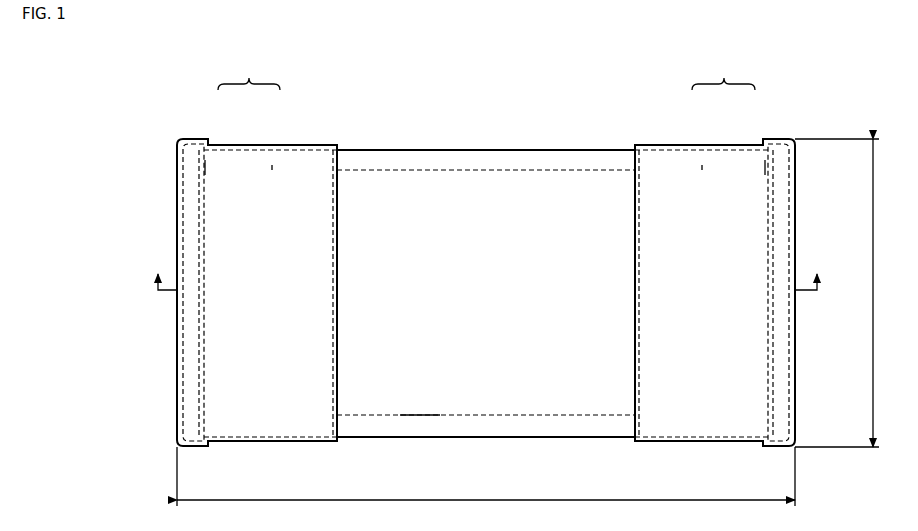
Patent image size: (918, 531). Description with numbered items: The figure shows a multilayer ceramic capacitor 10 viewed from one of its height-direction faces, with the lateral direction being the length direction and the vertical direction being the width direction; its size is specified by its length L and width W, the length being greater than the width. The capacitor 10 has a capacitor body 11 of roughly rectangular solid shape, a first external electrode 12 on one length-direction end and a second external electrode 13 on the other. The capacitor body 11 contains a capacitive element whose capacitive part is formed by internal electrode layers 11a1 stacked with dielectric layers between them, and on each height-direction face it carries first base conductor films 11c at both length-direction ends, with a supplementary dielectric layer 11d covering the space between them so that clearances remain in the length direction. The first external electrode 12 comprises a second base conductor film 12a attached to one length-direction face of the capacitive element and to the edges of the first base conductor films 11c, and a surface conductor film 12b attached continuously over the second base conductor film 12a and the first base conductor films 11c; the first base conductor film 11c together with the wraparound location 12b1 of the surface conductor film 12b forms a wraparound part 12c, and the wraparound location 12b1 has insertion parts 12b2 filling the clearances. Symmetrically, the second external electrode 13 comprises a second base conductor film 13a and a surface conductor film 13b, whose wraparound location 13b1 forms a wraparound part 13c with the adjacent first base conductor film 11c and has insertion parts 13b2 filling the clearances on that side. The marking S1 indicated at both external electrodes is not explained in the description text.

The multilayer ceramic capacitor 10 is at (175, 152).
The capacitor body 11 is at (430, 148).
The internal electrode layers 11a1 is at (418, 405).
The first base conductor films 11c is at (272, 165).
The supplementary dielectric layers 11d is at (553, 158).
The first external electrode 12 is at (177, 325).
The second base conductor film 12a is at (188, 222).
The surface conductor film 12b is at (182, 378).
The wraparound location 12b1 is at (207, 168).
The insertion parts 12b2 is at (342, 146).
The wraparound parts 12c is at (249, 73).
The second external electrode 13 is at (795, 323).
The second base conductor film 13a is at (785, 222).
The surface conductor film 13b is at (790, 378).
The wraparound location 13b1 is at (742, 165).
The insertion parts 13b2 is at (627, 145).
The wraparound parts 13c is at (723, 73).
The step portion S1 is at (487, 287).
The length L is at (486, 484).
The width W is at (843, 293).